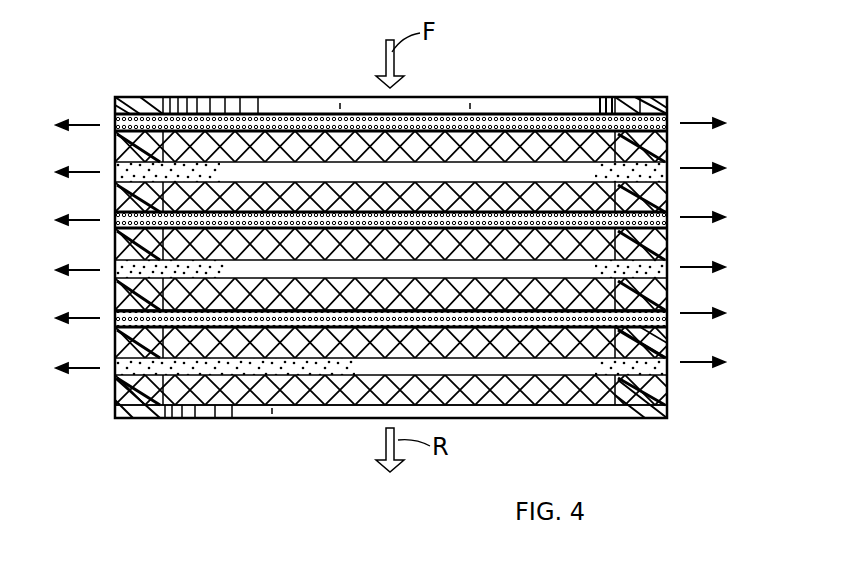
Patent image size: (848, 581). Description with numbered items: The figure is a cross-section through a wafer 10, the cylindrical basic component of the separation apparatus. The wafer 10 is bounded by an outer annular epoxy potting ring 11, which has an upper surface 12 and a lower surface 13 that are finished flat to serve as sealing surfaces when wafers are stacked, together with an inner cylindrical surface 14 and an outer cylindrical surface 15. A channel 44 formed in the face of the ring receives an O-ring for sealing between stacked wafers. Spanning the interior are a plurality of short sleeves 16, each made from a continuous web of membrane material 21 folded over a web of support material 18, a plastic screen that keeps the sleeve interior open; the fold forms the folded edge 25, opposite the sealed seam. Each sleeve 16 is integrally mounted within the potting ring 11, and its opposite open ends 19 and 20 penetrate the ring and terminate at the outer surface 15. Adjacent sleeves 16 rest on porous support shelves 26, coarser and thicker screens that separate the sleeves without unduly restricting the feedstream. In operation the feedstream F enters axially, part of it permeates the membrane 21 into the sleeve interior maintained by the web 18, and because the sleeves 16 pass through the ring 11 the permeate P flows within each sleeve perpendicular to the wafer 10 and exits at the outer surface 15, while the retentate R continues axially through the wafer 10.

The wafer 10 is at (670, 75).
The potting ring 11 is at (670, 398).
The upper surface 12 is at (650, 107).
The lower surface 13 is at (132, 420).
The inner cylindrical surface 14 is at (603, 110).
The outer cylindrical surface 15 is at (670, 341).
The sleeve 16 is at (470, 113).
The support material 18 is at (249, 122).
The sleeve end 19 is at (112, 174).
The sleeve end 20 is at (670, 170).
The membrane material 21 is at (525, 158).
The folded edge 25 is at (298, 366).
The porous support shelf 26 is at (322, 192).
The channel 44 is at (137, 105).